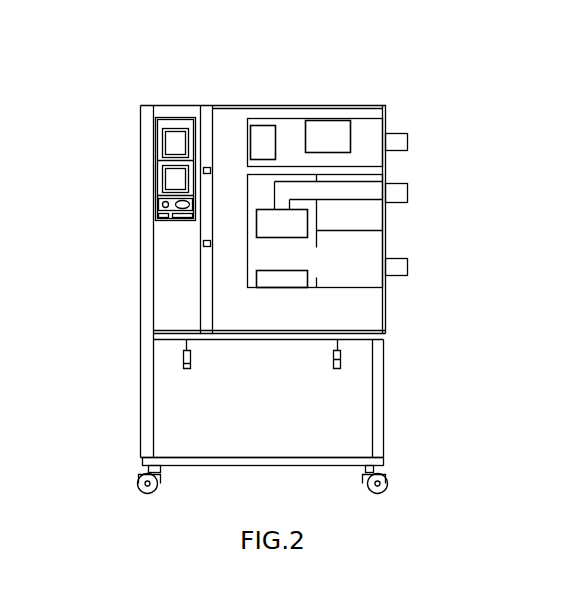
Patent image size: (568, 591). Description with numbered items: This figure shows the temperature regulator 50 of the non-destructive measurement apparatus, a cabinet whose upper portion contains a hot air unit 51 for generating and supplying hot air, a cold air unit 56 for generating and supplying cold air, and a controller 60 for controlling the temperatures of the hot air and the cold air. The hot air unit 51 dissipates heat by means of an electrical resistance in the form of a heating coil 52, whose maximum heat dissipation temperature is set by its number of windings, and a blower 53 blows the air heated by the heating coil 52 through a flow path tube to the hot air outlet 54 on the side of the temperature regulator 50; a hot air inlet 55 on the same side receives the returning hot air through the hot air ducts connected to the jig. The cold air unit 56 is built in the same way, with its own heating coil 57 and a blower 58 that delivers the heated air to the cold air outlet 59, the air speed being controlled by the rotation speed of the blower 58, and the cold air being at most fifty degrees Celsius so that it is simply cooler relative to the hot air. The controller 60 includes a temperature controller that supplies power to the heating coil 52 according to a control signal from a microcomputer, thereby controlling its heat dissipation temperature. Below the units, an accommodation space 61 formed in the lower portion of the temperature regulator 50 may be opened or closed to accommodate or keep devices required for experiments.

The temperature regulator 50 is at (128, 136).
The hot air unit 51 is at (355, 287).
The heating coil 52 is at (262, 275).
The blower 53 is at (262, 223).
The hot air outlet 54 is at (403, 192).
The hot air inlet 55 is at (404, 267).
The cold air unit 56 is at (290, 118).
The heating coil 57 is at (265, 133).
The blower 58 is at (331, 125).
The cold air outlet 59 is at (405, 142).
The controller 60 is at (174, 113).
The accommodation space 61 is at (358, 402).